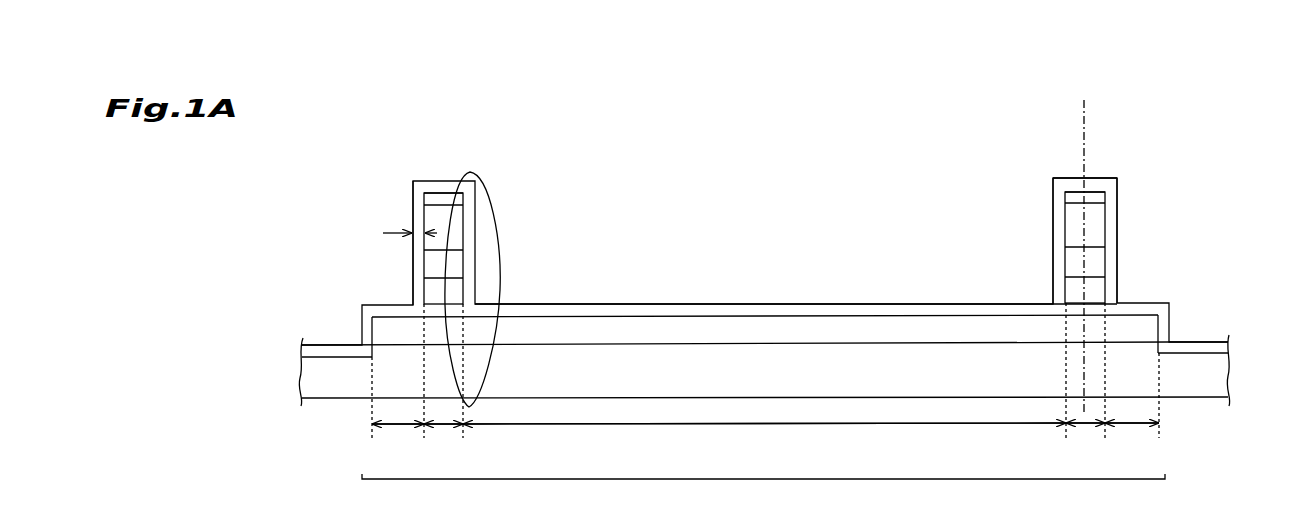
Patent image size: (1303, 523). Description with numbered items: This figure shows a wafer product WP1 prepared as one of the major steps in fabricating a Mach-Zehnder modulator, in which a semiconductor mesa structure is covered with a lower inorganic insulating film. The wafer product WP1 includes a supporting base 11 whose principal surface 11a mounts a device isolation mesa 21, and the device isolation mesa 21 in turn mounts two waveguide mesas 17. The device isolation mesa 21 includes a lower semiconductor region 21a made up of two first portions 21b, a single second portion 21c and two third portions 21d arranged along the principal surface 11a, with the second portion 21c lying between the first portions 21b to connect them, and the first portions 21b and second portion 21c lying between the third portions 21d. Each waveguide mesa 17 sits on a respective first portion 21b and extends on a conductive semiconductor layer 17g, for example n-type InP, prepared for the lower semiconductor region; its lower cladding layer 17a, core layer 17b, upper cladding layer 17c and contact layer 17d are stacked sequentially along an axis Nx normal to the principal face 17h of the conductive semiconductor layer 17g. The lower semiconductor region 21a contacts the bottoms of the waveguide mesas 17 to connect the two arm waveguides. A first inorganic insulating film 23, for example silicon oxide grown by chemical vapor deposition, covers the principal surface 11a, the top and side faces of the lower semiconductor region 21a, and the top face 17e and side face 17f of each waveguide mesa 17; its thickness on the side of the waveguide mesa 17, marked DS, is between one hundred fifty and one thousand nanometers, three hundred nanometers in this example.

The supporting base 11 is at (1218, 373).
The principal surface 11a is at (1148, 340).
The device isolation mesa 21 is at (391, 325).
The lower semiconductor region 21a is at (763, 494).
The first portions 21b is at (447, 428).
The second portion 21c is at (764, 450).
The third portions 21d is at (398, 428).
The first inorganic insulating film 23 is at (1143, 300).
The waveguide mesa 17 is at (451, 190).
The lower cladding layer 17a is at (1054, 289).
The core layer 17b is at (1057, 259).
The upper cladding layer 17c is at (1063, 226).
The contact layer 17d is at (1057, 195).
The top face 17e is at (442, 327).
The side face 17f is at (422, 216).
The conductive semiconductor layer 17g is at (1062, 332).
The principal face 17h is at (879, 318).
The wafer product WP1 is at (477, 173).
The thickness on the side of the waveguide mesa DS is at (397, 218).
The axis Nx is at (1088, 130).